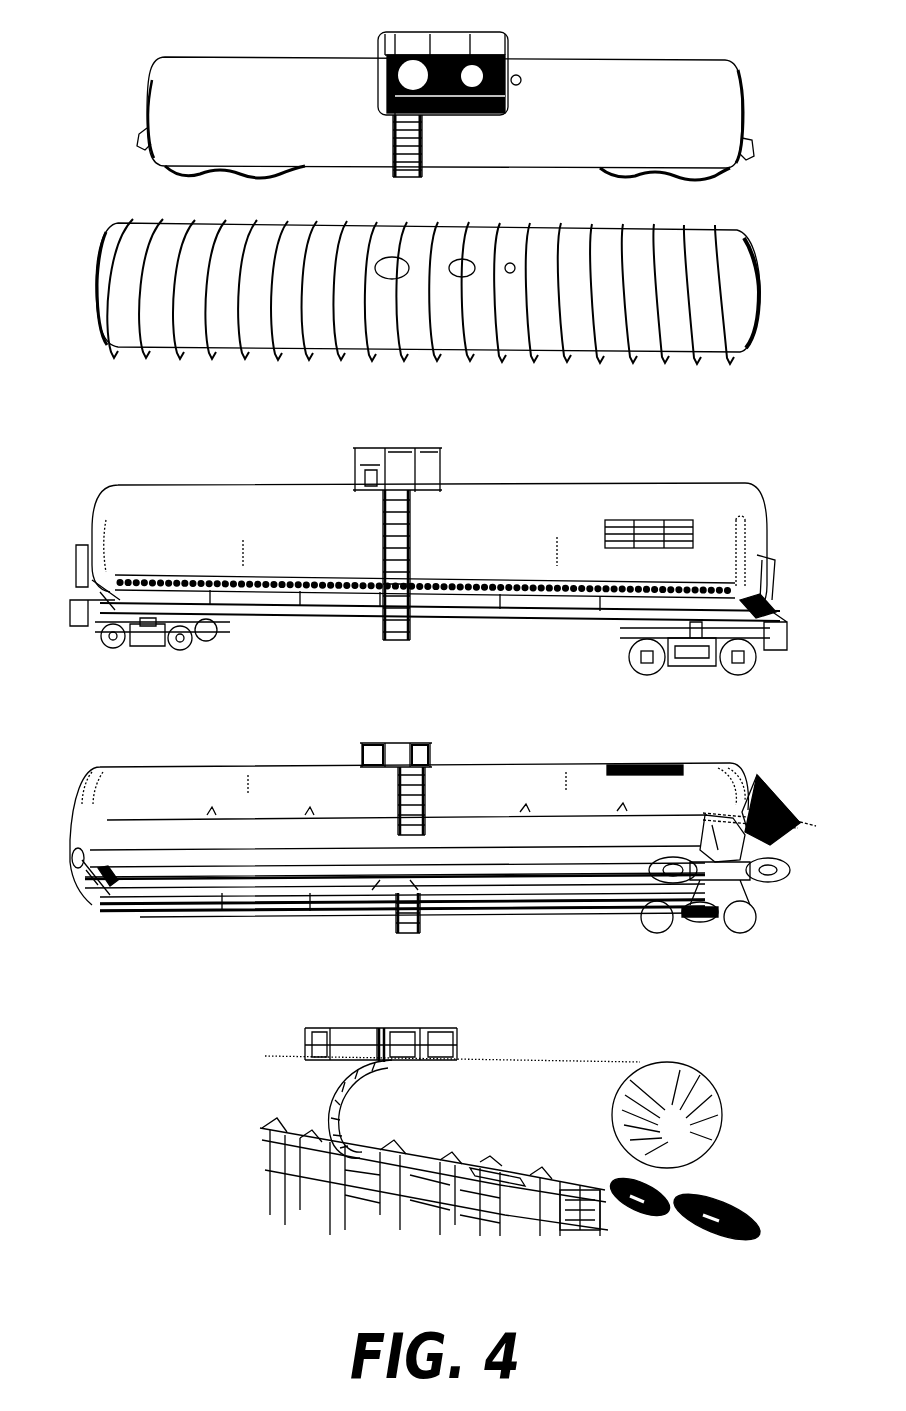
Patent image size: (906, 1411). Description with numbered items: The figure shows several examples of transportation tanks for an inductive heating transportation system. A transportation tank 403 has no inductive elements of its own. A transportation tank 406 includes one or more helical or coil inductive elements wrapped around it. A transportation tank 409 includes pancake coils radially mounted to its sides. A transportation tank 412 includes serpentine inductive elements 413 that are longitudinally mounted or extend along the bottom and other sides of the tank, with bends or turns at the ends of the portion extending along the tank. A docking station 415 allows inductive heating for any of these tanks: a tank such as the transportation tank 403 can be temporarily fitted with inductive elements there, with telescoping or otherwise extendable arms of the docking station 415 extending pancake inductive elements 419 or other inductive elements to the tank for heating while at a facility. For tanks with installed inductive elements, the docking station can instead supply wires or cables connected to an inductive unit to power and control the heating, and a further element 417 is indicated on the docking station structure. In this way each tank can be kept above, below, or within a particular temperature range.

The transportation tank 403 is at (136, 50).
The transportation tank 406 is at (104, 202).
The transportation tank 409 is at (94, 446).
The transportation tank 412 is at (94, 728).
The serpentine inductive elements 413 is at (96, 880).
The docking station 415 is at (224, 1099).
The underframe component 417 is at (483, 1152).
The pancake inductive elements 419 is at (705, 1224).